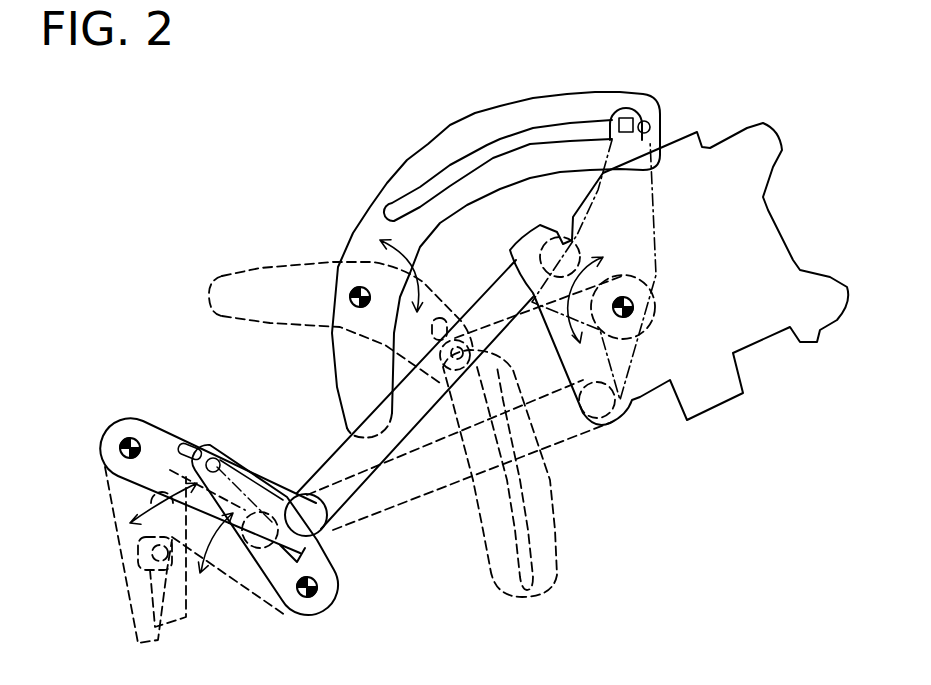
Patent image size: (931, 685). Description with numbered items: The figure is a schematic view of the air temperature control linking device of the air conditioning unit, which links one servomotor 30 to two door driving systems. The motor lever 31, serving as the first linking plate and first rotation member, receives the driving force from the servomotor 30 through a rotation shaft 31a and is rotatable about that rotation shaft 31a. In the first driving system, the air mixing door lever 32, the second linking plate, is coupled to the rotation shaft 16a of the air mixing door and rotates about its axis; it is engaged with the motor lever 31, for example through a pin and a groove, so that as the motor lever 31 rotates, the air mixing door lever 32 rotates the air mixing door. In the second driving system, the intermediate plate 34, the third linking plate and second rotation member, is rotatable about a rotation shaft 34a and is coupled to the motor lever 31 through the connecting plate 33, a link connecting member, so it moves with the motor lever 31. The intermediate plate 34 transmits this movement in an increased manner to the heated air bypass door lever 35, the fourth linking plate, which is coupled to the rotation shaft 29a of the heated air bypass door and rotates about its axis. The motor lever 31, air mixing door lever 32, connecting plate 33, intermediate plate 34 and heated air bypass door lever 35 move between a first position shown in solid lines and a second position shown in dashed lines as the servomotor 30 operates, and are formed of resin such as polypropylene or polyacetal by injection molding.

The rotation shaft of the air mixing door 16a is at (348, 293).
The rotation shaft of the heated air bypass door 29a is at (122, 443).
The servomotor 30 is at (753, 227).
The motor lever 31 is at (637, 143).
The rotation shaft 31a is at (633, 313).
The air mixing door lever 32 is at (375, 222).
The connecting plate 33 is at (340, 460).
The intermediate plate 34 is at (287, 600).
The rotation shaft 34a is at (312, 595).
The heated air bypass door lever 35 is at (130, 422).